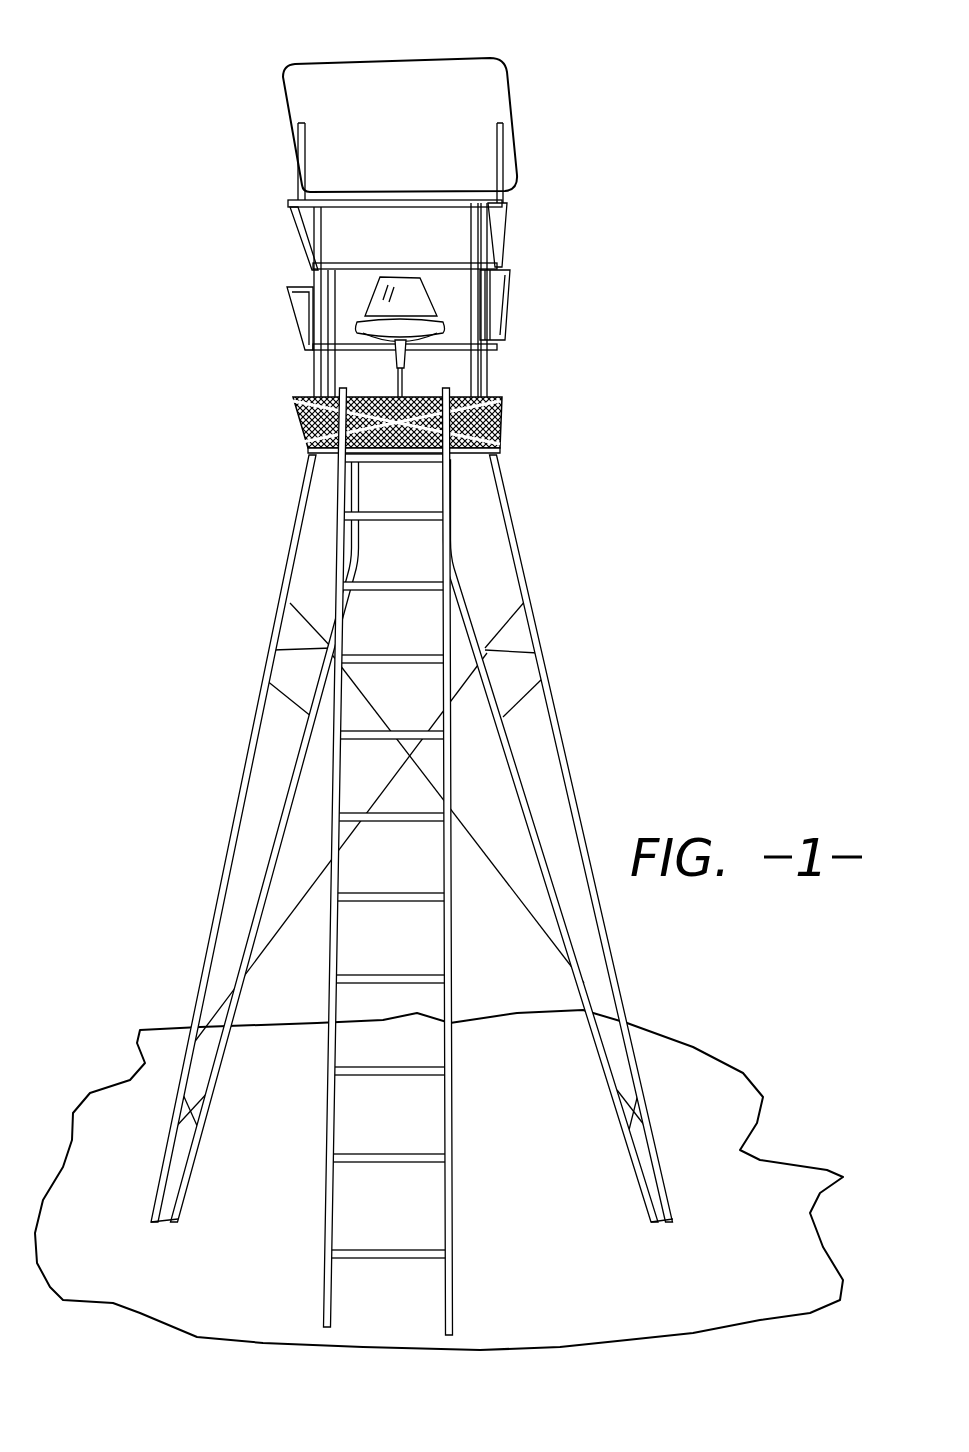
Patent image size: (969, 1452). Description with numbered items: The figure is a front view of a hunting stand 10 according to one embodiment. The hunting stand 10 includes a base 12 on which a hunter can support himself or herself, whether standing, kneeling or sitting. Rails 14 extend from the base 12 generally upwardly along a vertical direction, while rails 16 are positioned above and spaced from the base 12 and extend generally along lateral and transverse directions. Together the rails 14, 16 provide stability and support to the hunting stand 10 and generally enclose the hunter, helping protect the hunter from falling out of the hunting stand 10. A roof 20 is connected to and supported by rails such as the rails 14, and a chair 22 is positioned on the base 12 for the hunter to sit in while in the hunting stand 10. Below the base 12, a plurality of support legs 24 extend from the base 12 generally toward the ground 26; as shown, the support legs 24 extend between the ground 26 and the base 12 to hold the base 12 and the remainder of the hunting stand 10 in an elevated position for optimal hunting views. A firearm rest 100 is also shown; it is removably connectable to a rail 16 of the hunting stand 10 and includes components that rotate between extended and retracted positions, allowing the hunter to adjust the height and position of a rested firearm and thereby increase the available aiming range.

The hunting stand 10 is at (447, 685).
The base 12 is at (504, 432).
The rails 14 is at (305, 274).
The rails 16 is at (364, 205).
The roof 20 is at (518, 100).
The chair 22 is at (442, 292).
The support legs 24 is at (203, 910).
The ground 26 is at (690, 1072).
The firearm rest 100 is at (430, 216).